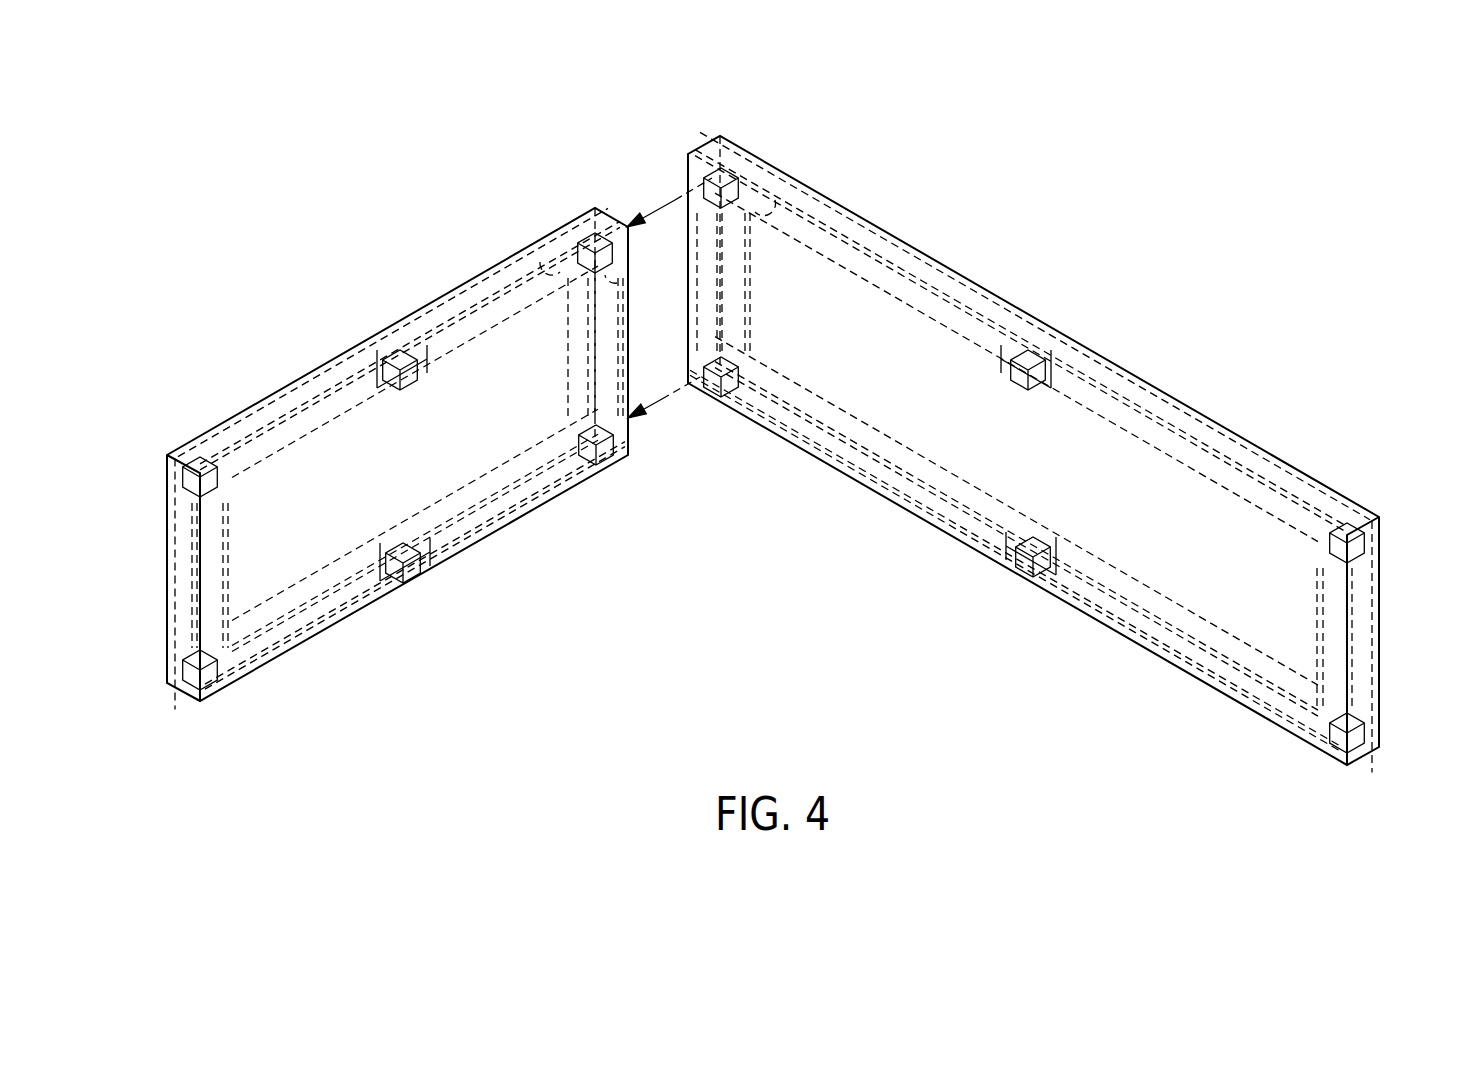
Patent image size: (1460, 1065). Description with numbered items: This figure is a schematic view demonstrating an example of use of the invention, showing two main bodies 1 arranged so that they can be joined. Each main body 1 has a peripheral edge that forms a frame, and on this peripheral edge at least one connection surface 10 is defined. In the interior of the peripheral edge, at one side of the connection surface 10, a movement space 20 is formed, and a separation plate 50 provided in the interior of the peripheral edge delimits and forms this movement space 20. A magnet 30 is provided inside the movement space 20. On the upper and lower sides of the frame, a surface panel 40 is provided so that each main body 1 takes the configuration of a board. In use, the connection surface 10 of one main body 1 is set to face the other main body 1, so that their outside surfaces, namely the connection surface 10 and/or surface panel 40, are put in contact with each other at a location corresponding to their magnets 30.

The main body 1 is at (420, 312).
The connection surface 10 is at (343, 373).
The movement space 20 is at (575, 212).
The magnet 30 is at (576, 270).
The surface panel 40 is at (263, 400).
The separation plate 50 is at (543, 263).